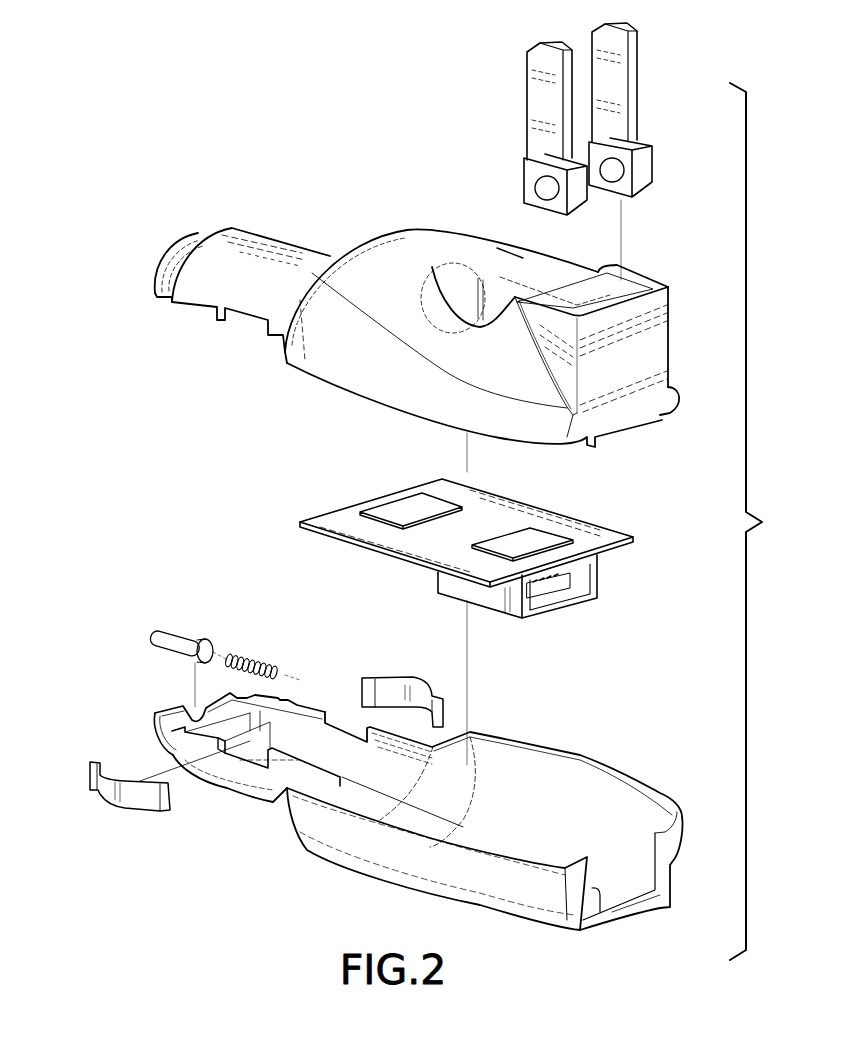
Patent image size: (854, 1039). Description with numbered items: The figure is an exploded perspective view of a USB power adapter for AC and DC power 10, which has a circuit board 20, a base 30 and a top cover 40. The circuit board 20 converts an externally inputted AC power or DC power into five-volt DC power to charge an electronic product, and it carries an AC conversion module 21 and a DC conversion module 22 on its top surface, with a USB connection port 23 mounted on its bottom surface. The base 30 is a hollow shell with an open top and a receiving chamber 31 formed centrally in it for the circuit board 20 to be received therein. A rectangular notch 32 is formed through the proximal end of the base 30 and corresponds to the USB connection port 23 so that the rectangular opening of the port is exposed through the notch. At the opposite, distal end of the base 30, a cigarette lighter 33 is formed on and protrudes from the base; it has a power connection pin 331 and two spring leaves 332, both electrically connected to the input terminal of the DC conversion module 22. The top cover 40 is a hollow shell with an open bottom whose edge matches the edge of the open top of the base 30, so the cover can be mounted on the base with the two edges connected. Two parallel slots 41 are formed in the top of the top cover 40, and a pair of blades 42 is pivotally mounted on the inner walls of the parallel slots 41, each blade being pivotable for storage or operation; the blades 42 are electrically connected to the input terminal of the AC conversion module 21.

The USB power adapter for AC and DC power 10 is at (126, 452).
The circuit board 20 is at (370, 537).
The AC conversion module 21 is at (387, 507).
The DC conversion module 22 is at (535, 535).
The USB connection port 23 is at (562, 598).
The base 30 is at (328, 853).
The receiving chamber 31 is at (640, 815).
The rectangular notch 32 is at (597, 908).
The cigarette lighter 33 is at (252, 787).
The power connection pin 331 is at (177, 640).
The spring leaves 332 is at (132, 800).
The top cover 40 is at (663, 345).
The parallel slots 41 is at (472, 287).
The blades 42 is at (538, 93).